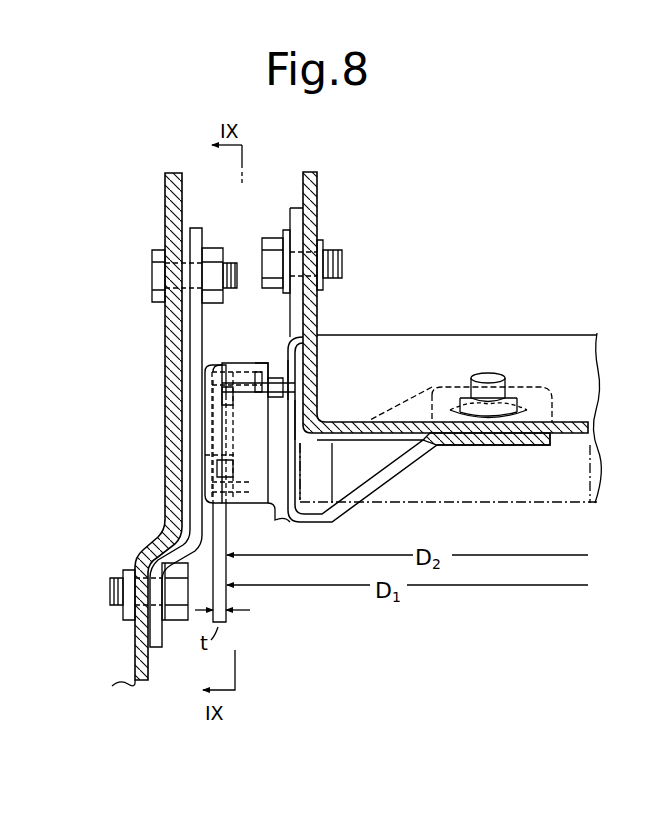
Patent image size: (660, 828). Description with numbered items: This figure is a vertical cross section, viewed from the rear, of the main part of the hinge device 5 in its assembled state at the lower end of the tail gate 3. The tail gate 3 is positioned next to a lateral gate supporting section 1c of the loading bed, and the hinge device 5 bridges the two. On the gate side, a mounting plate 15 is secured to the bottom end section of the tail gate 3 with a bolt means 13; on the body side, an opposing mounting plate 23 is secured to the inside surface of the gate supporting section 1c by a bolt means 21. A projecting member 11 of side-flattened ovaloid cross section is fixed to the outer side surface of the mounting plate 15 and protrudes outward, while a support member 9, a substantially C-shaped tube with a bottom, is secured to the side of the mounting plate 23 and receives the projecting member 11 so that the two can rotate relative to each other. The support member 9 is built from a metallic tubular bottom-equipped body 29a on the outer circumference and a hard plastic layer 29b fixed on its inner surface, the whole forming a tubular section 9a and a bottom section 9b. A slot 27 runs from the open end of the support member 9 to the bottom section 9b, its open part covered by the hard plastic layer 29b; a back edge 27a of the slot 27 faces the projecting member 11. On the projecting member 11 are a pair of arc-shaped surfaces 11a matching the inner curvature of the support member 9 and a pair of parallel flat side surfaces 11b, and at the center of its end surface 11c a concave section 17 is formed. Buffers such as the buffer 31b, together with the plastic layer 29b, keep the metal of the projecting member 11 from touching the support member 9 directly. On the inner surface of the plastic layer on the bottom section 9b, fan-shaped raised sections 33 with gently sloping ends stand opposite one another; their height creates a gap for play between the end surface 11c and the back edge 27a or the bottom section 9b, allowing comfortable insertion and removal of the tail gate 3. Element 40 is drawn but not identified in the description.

The gate supporting section 1c is at (155, 181).
The tail gate 3 is at (303, 183).
The hinge device 5 is at (237, 362).
The support member 9 is at (210, 366).
The tubular section 9a is at (226, 522).
The bottom section 9b is at (214, 400).
The projecting member 11 is at (277, 468).
The arc-shaped surfaces 11a is at (272, 380).
The flat side surfaces 11b is at (275, 410).
The end surface 11c is at (205, 494).
The bolt means 13 is at (340, 260).
The mounting plate 15 is at (296, 316).
The concave section 17 is at (263, 447).
The bolt means 21 is at (152, 274).
The mounting plate 23 is at (190, 342).
The slot 27 is at (232, 437).
The back edge of the slot 27a is at (235, 390).
The tubular bottom-equipped body 29a is at (205, 482).
The hard plastic layer 29b is at (273, 508).
The buffer 31b is at (292, 370).
The raised sections 33 is at (268, 500).
The stopper 40 is at (270, 372).